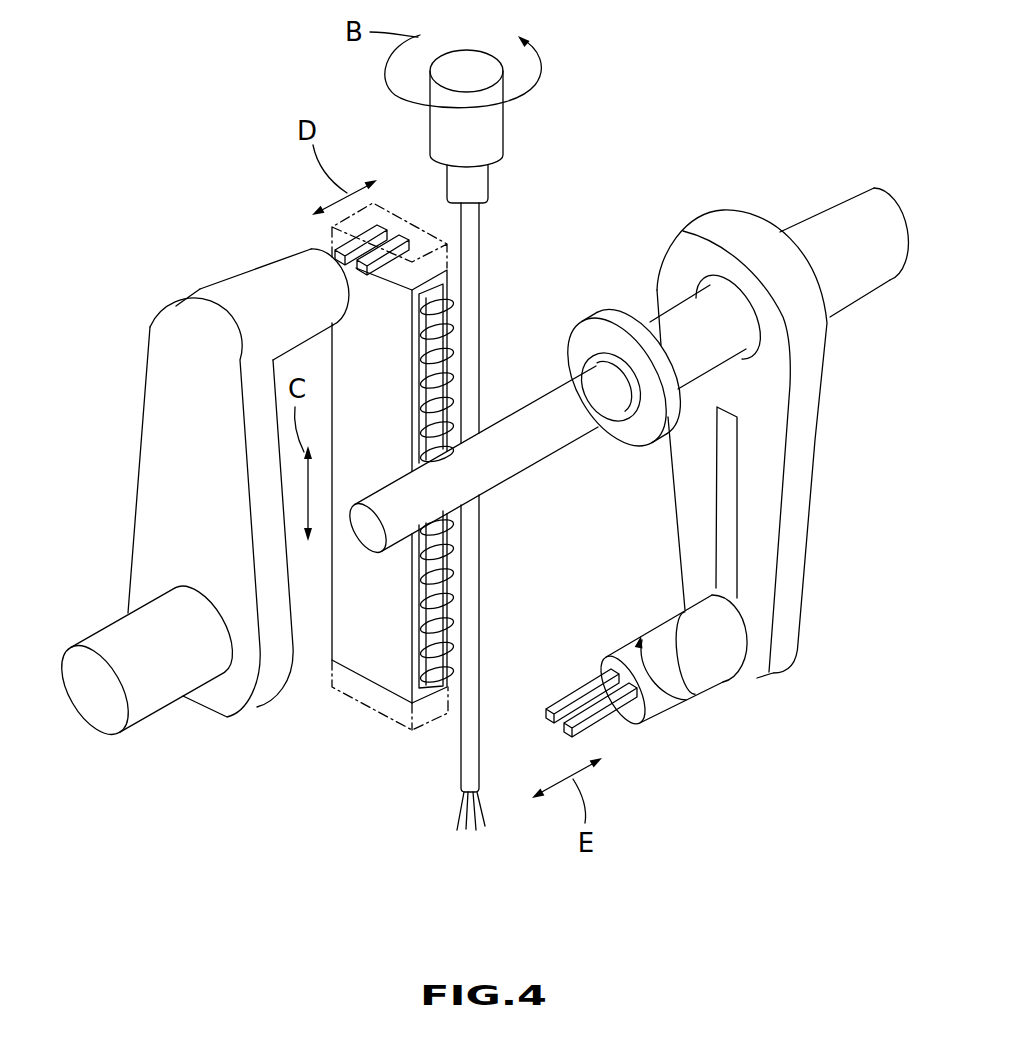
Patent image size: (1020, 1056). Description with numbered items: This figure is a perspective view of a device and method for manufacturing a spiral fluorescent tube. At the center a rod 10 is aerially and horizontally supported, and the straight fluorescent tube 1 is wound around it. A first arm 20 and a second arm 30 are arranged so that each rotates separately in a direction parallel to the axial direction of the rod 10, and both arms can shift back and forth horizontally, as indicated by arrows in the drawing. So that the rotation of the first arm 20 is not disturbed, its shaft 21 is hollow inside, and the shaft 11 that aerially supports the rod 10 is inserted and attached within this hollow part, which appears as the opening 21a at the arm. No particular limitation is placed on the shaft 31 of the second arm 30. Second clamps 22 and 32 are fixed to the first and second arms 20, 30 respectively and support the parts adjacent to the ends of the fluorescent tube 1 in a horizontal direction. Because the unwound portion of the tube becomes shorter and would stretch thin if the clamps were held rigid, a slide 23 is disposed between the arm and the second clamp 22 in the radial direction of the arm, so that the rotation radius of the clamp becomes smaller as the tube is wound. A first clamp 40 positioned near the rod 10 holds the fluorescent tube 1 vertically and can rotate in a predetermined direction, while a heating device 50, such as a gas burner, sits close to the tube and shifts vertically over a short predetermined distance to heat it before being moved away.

The fluorescent tube 1 is at (467, 790).
The rod 10 is at (527, 462).
The shaft 11 is at (680, 327).
The first arm 20 is at (783, 653).
The shaft of first arm 21 is at (835, 228).
The bearing hole 21a is at (745, 355).
The second clamp 22 is at (705, 670).
The slide 23 is at (727, 553).
The second arm 30 is at (233, 700).
The shaft of second arm 31 is at (160, 697).
The second clamp 32 is at (280, 297).
The first clamp 40 is at (497, 128).
The heating device 50 is at (388, 675).